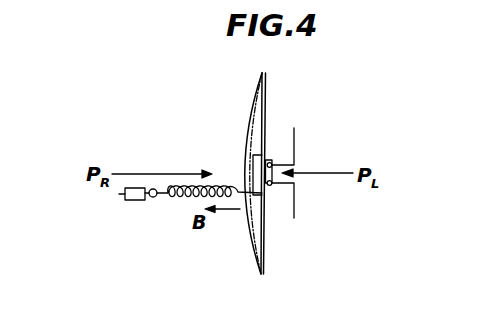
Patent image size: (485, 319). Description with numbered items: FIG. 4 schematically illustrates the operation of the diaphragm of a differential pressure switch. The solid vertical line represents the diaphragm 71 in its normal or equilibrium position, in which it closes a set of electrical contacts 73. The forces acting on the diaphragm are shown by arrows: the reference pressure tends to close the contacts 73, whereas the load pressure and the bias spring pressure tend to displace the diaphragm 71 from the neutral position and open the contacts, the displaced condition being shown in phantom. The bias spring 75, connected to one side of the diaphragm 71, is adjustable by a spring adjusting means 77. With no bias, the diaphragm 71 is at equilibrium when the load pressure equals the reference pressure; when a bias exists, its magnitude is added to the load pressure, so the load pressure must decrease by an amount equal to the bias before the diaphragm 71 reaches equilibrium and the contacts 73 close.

The diaphragm 71 is at (266, 112).
The electrical contacts 73 is at (268, 159).
The bias spring 75 is at (186, 197).
The spring adjusting means 77 is at (133, 201).